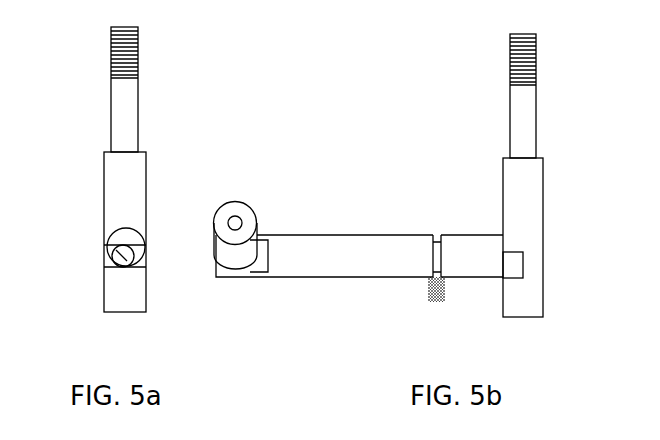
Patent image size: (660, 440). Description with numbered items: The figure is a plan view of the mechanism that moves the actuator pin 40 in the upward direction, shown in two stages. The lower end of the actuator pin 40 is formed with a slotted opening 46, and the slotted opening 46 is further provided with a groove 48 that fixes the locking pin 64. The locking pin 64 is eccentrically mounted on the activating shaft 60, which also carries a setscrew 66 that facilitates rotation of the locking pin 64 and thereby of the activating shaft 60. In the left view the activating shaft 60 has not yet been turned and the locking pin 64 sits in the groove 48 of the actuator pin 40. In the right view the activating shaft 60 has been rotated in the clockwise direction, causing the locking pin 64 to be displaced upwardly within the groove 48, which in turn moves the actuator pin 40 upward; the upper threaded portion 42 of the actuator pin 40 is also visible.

In FIG. 5A, the actuator pin 40 is at (182, 100).
In FIG. 5B, the actuator pin 40 is at (480, 104).
In FIG. 5A, the threaded rod 42 is at (139, 46).
In FIG. 5B, the threaded rod 42 is at (510, 48).
In FIG. 5A, the slotted opening 46 is at (146, 267).
In FIG. 5B, the slotted opening 46 is at (524, 262).
In FIG. 5A, the groove 48 is at (107, 247).
In FIG. 5B, the activating shaft 60 is at (334, 278).
In FIG. 5B, the locking pin 64 is at (462, 278).
In FIG. 5B, the setscrew 66 is at (430, 288).